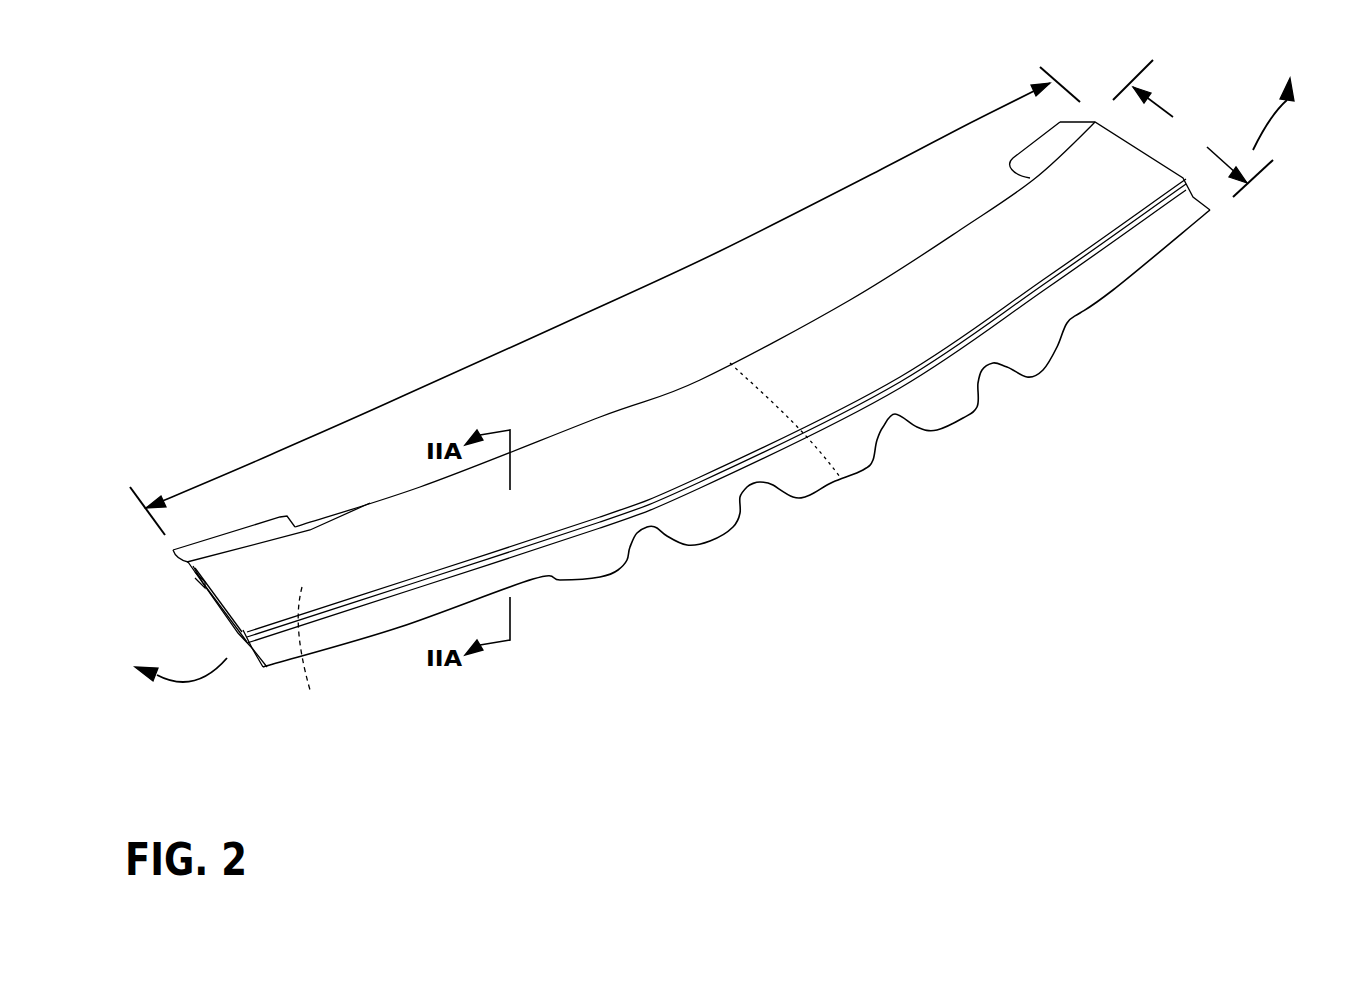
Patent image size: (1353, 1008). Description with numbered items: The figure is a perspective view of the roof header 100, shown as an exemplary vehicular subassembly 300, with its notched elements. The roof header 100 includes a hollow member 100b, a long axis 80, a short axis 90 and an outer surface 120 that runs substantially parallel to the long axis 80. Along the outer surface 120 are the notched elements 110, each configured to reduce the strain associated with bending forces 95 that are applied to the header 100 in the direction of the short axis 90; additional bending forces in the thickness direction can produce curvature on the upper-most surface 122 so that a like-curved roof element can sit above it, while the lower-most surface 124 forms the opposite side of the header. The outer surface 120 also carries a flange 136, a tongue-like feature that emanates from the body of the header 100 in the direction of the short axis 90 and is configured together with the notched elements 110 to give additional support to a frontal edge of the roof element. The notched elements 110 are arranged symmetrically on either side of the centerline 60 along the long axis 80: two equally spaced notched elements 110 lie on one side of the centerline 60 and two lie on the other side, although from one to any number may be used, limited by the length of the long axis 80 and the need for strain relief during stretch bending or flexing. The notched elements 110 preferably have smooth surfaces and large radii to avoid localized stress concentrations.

The centerline 60 is at (843, 457).
The long axis 80 is at (605, 301).
The short axis 90 is at (1193, 128).
The bending forces 95 is at (1288, 122).
The roof header 100 is at (698, 441).
The vehicular subassembly 300 is at (691, 441).
The hollow member 100b is at (691, 342).
The notched elements 110 is at (759, 521).
The outer surface 120 is at (407, 607).
The upper-most surface 122 is at (872, 343).
The lower-most surface 124 is at (313, 654).
The flange 136 is at (250, 682).